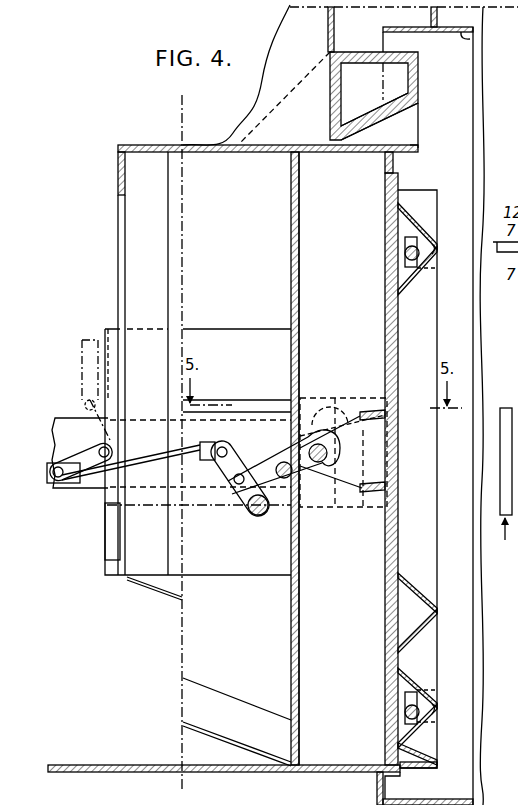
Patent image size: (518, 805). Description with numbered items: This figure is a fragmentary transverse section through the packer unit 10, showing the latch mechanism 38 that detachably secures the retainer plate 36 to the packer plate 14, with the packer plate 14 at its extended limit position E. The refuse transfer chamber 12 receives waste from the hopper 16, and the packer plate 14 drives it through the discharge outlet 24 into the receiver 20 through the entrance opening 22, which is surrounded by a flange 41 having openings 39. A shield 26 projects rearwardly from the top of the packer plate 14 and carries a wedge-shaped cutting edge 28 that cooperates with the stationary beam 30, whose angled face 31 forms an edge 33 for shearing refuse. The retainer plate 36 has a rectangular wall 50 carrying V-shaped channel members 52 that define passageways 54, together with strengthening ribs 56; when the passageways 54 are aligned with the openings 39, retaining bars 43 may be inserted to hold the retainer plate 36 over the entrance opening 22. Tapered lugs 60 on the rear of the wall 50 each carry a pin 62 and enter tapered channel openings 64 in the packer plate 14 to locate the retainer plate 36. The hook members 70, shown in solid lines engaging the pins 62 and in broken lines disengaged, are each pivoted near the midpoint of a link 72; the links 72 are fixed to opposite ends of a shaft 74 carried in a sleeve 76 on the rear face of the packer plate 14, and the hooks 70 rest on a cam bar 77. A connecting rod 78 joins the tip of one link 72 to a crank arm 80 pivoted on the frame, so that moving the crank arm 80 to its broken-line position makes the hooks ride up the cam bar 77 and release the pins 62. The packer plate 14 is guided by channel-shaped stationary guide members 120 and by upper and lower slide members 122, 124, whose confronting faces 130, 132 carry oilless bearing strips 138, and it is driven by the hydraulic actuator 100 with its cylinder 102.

The packer unit 10 is at (287, 143).
The refuse transfer chamber 12 is at (310, 778).
The packer plate 14 is at (386, 168).
The hopper 16 is at (334, 40).
The receiver 20 is at (478, 70).
The entrance opening 22 is at (466, 38).
The discharge outlet 24 is at (345, 155).
The shield 26 is at (222, 144).
The cutting edge 28 is at (414, 152).
The stationary beam 30 is at (408, 105).
The face 31 is at (400, 122).
The edge 33 is at (316, 458).
The retainer plate 36 is at (418, 212).
The latch mechanism 38 is at (217, 472).
The openings 39 is at (428, 254).
The flange 41 is at (462, 114).
The retaining bars 43 is at (408, 256).
The wall 50 is at (398, 494).
The V-shaped channel members 52 is at (428, 252).
The passageways 54 is at (404, 214).
The strengthening ribs 56 is at (437, 505).
The lugs 60 is at (345, 420).
The pin 62 is at (320, 464).
The tapered channel openings 64 is at (386, 416).
The hook members 70 is at (328, 405).
The link 72 is at (242, 512).
The shaft 74 is at (260, 512).
The sleeve 76 is at (256, 516).
The cam bar 77 is at (276, 466).
The connecting rod 78 is at (148, 462).
The crank arm 80 is at (82, 364).
The hydraulic actuator 100 is at (506, 537).
The cylinder 102 is at (506, 408).
The stationary guide members 120 is at (60, 418).
The upper slide member 122 is at (228, 329).
The lower slide member 124 is at (105, 572).
The confronting face 130 is at (115, 400).
The confronting face 132 is at (108, 508).
The oilless bearing strips 138 is at (246, 401).
The extended limit position E is at (398, 338).